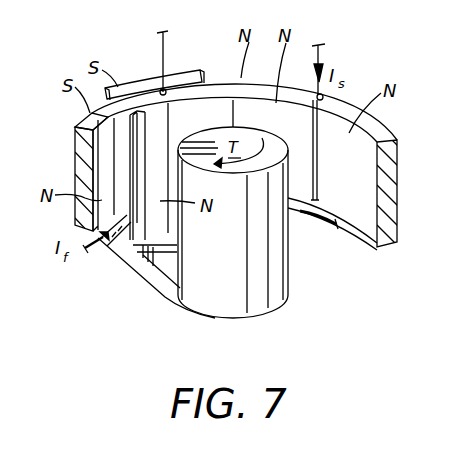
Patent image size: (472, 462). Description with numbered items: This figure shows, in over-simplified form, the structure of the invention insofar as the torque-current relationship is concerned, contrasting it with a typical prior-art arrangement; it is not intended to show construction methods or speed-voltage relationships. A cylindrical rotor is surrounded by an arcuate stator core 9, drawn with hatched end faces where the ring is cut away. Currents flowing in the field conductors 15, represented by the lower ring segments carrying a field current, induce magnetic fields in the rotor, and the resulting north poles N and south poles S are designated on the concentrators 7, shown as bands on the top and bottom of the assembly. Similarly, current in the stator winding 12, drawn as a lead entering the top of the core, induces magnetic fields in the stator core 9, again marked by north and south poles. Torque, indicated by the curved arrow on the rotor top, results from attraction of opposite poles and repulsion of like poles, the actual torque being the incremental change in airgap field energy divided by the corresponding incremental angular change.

The concentrator 7 is at (186, 68).
The stator core 9 is at (398, 192).
The stator winding 12 is at (326, 60).
The field conductor 15 is at (97, 254).